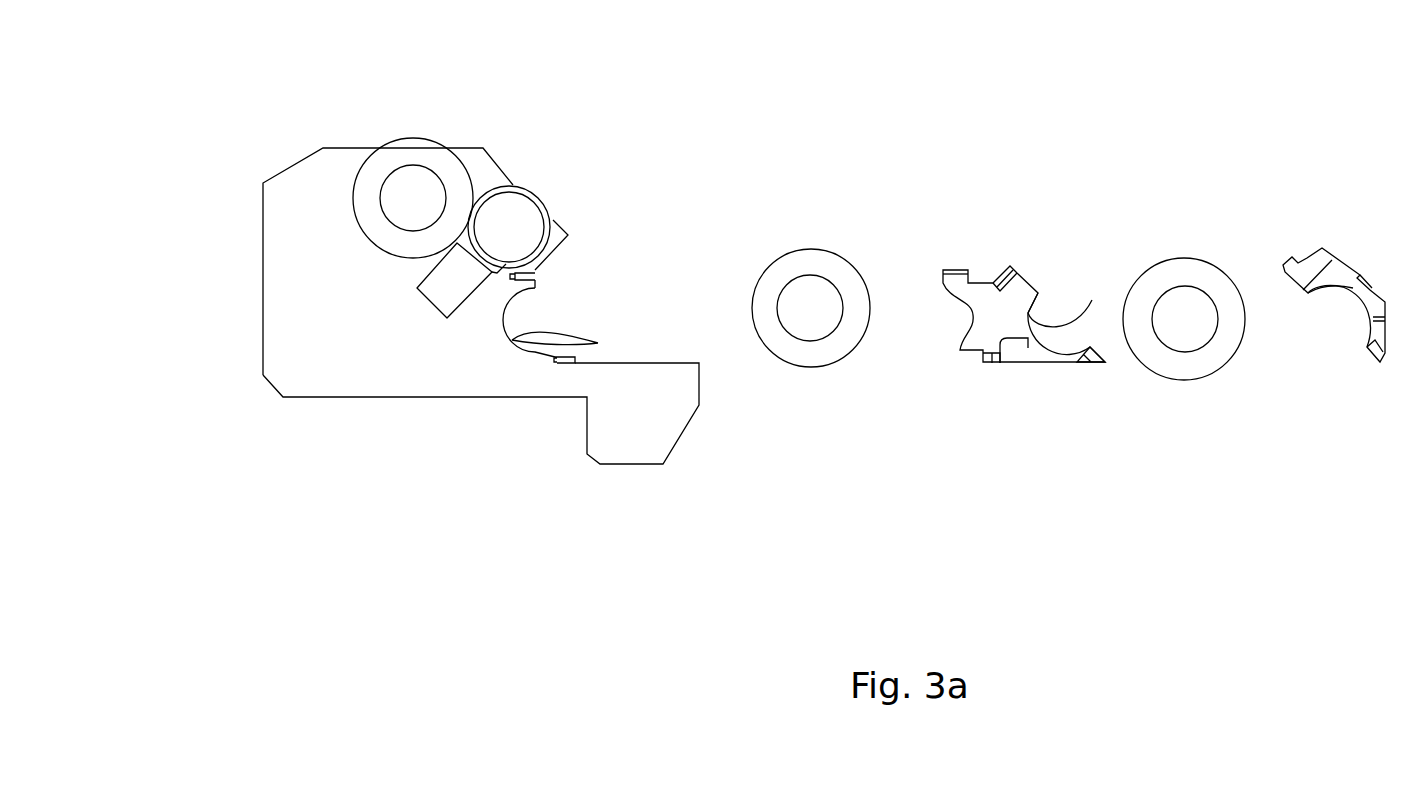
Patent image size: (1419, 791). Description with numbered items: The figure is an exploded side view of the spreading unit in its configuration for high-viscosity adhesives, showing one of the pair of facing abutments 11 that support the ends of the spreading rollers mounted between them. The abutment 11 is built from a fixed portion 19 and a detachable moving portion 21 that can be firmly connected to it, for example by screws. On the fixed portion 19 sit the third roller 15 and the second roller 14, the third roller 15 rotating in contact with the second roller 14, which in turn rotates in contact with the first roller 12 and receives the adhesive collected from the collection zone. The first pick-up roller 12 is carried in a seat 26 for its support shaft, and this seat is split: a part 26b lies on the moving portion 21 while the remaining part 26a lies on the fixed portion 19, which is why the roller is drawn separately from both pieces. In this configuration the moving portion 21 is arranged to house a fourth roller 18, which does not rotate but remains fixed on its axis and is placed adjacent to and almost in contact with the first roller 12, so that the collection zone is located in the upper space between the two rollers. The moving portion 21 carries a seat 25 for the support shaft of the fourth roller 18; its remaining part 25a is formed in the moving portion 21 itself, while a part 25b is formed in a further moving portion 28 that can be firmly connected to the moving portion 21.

The abutment 11 is at (262, 168).
The fixed portion 19 is at (290, 280).
The third roller 15 is at (415, 163).
The second roller 14 is at (523, 213).
The seat 26 is at (533, 309).
The remaining part of the seat 26a is at (598, 343).
The part of the seat 26b is at (970, 312).
The first roller 12 is at (810, 332).
The moving portion 21 is at (1037, 360).
The seat 25 is at (1075, 337).
The remaining part of the seat 25a is at (1092, 300).
The part of the seat 25b is at (1353, 288).
The fourth roller 18 is at (1187, 332).
The further moving portion 28 is at (1320, 258).